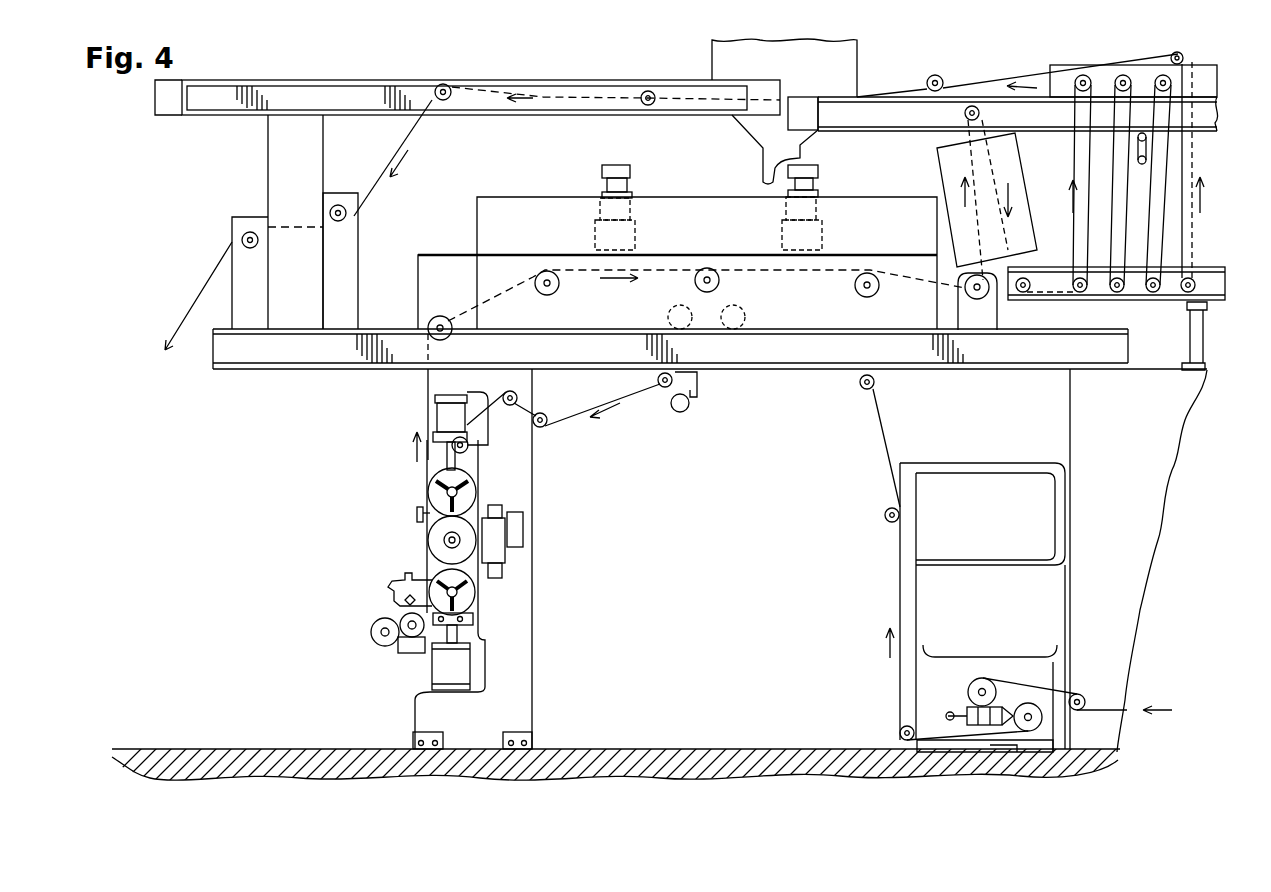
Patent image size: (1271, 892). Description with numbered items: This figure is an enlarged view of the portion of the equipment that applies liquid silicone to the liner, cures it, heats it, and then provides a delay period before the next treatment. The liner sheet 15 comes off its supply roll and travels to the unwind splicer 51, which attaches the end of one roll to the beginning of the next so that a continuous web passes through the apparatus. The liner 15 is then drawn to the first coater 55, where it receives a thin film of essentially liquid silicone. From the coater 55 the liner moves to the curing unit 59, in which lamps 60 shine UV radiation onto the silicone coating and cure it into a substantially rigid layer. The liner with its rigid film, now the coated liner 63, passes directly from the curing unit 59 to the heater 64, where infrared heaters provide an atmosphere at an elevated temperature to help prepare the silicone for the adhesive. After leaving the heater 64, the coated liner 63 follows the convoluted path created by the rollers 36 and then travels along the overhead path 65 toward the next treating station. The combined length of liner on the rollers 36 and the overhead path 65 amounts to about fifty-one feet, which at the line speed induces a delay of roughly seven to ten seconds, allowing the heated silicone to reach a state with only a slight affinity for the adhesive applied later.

The liner sheet 15 is at (625, 392).
The rollers 36 is at (1176, 52).
The unwind splicer 51 is at (857, 590).
The #1 coater 55 is at (522, 602).
The curing unit 59 is at (675, 208).
The lamps 60 is at (595, 228).
The coated liner 63 is at (950, 293).
The heater 64 is at (938, 173).
The overhead path 65 is at (526, 92).